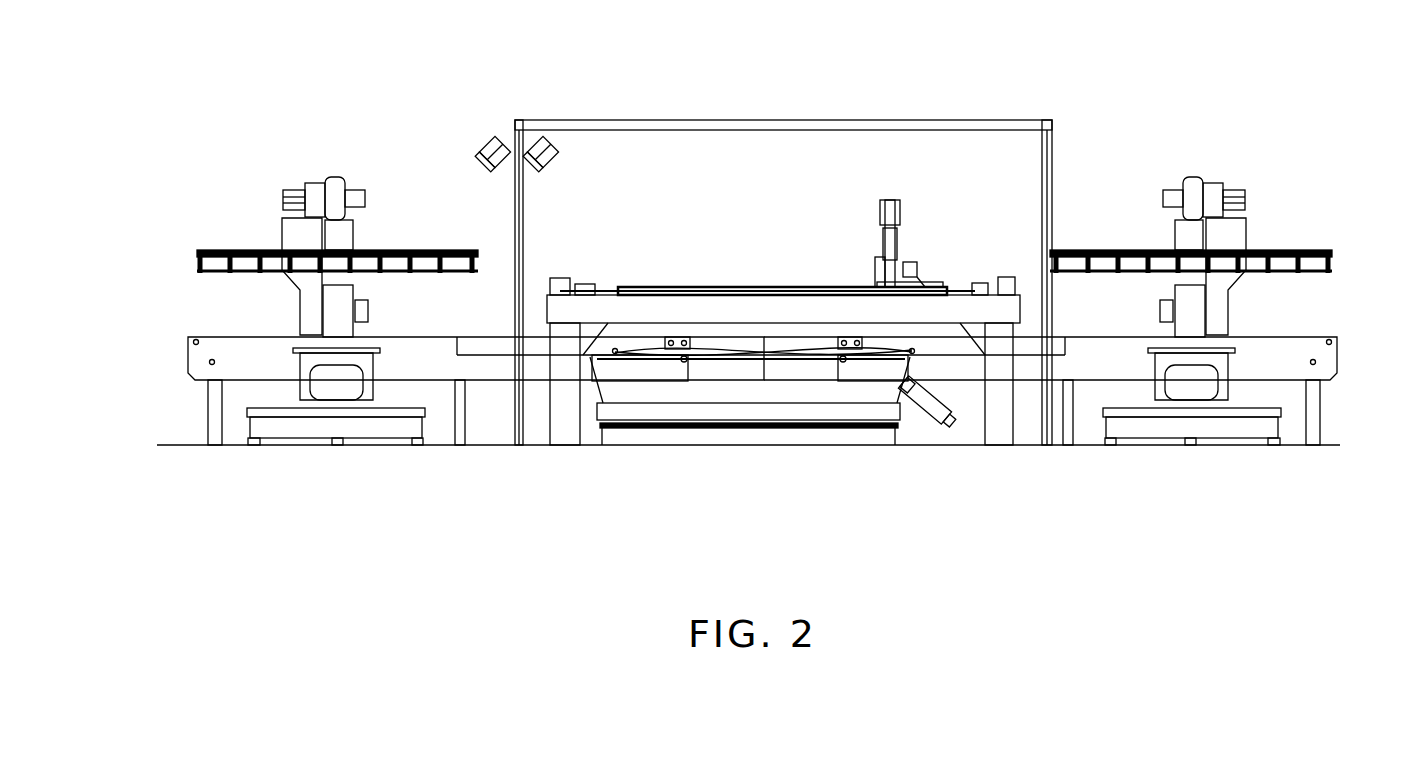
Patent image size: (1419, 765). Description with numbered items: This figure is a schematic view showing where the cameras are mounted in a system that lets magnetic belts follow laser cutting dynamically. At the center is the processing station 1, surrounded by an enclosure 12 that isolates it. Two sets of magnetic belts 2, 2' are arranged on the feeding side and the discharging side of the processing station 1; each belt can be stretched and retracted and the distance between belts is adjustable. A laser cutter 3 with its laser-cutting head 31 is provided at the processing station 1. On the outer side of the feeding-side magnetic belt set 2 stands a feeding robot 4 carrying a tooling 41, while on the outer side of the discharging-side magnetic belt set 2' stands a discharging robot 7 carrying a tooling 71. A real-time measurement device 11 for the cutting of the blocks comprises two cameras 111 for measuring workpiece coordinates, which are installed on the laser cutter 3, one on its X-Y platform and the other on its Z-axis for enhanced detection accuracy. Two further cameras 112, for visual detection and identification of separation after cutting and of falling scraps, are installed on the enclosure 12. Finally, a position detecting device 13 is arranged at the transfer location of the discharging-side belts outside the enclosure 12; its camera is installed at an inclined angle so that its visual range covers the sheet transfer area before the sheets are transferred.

The processing station 1 is at (770, 302).
The magnetic belt set on feeding side 2 is at (1050, 442).
The magnetic belt set on discharging side 2' is at (476, 438).
The laser cutter 3 is at (866, 171).
The laser-cutting head 31 is at (895, 275).
The feeding robot 4 is at (1227, 264).
The tooling of the feeding robot 41 is at (1320, 250).
The discharging robot 7 is at (289, 261).
The tooling of the discharging robot 71 is at (237, 267).
The real-time measurement device 11 is at (570, 148).
The cameras for measuring workpiece coordinates 111 is at (545, 155).
The cameras for visual detection of separation and falling scraps 112 is at (880, 245).
The enclosure 12 is at (1035, 128).
The position detecting device 13 is at (497, 154).